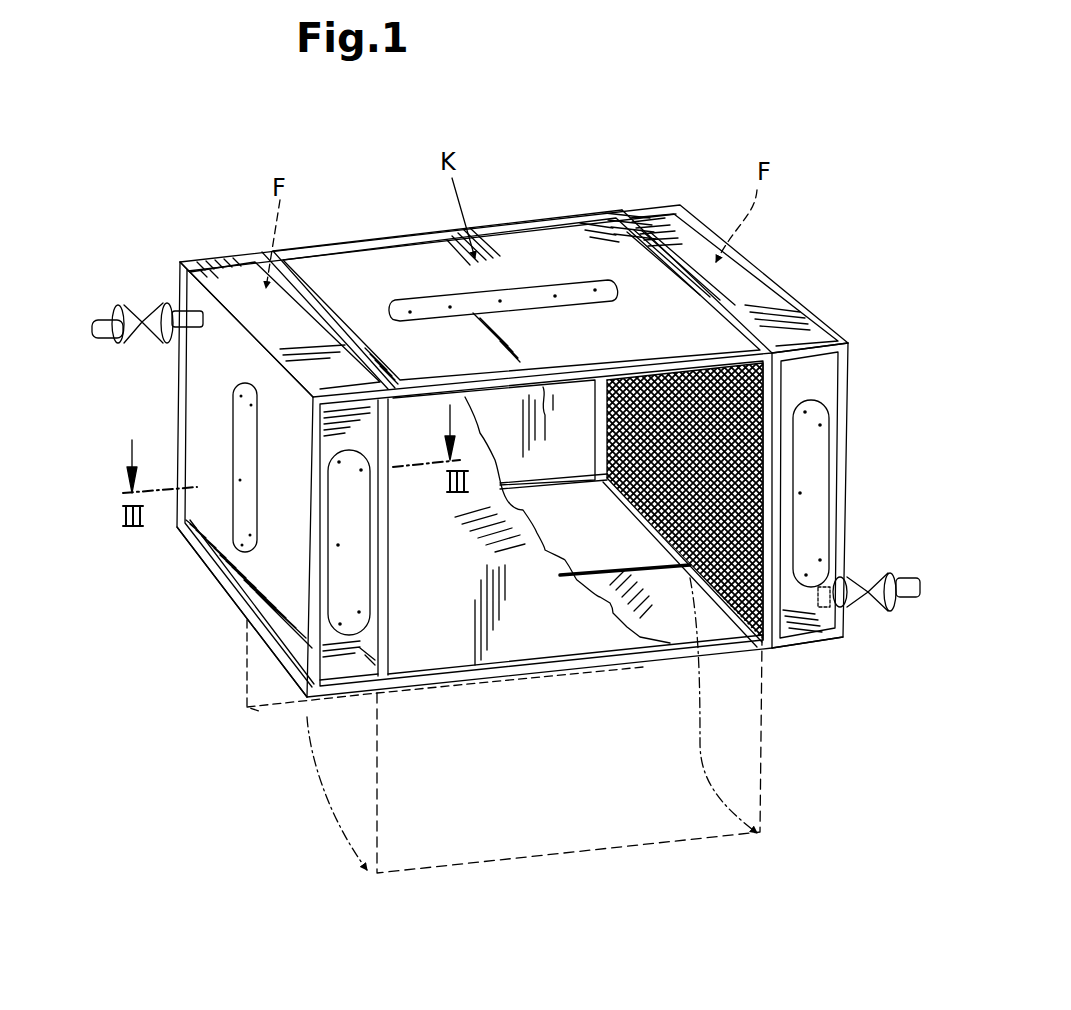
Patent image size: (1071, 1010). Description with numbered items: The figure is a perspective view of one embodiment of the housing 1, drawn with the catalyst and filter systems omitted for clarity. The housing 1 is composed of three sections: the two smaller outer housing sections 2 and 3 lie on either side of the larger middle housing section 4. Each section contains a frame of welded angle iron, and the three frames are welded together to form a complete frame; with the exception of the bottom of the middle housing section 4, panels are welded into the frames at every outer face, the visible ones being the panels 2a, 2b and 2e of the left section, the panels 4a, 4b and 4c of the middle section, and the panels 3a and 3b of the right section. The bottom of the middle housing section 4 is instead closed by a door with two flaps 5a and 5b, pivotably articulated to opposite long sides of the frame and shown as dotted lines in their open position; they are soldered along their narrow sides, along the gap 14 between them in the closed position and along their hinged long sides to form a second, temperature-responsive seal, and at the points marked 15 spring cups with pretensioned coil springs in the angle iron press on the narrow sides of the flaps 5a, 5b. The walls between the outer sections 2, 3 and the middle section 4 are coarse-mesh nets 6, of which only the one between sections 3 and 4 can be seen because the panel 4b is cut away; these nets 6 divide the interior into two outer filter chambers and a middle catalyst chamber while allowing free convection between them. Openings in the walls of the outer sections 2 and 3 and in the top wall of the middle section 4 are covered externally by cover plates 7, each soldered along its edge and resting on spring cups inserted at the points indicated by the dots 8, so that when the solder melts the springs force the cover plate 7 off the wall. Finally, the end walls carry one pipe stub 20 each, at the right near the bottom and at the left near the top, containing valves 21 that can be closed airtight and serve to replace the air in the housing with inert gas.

The housing 1 is at (507, 188).
The outer housing section 2 is at (220, 252).
The panel 2a is at (293, 327).
The panel 2b is at (357, 683).
The panel 2e is at (213, 550).
The outer housing section 3 is at (652, 205).
The panel 3a is at (753, 290).
The panel 3b is at (797, 627).
The middle housing section 4 is at (545, 212).
The panel 4a is at (387, 243).
The panel 4b is at (497, 640).
The panel 4c is at (543, 387).
The flap 5a is at (527, 527).
The flap 5b is at (610, 607).
The coarse-mesh net 6 is at (692, 387).
The cover plate 7 is at (550, 287).
The dots 8 is at (423, 307).
The gap 14 is at (623, 568).
The points 15 is at (723, 705).
The pipe stub 20 is at (180, 313).
The valve 21 is at (127, 310).